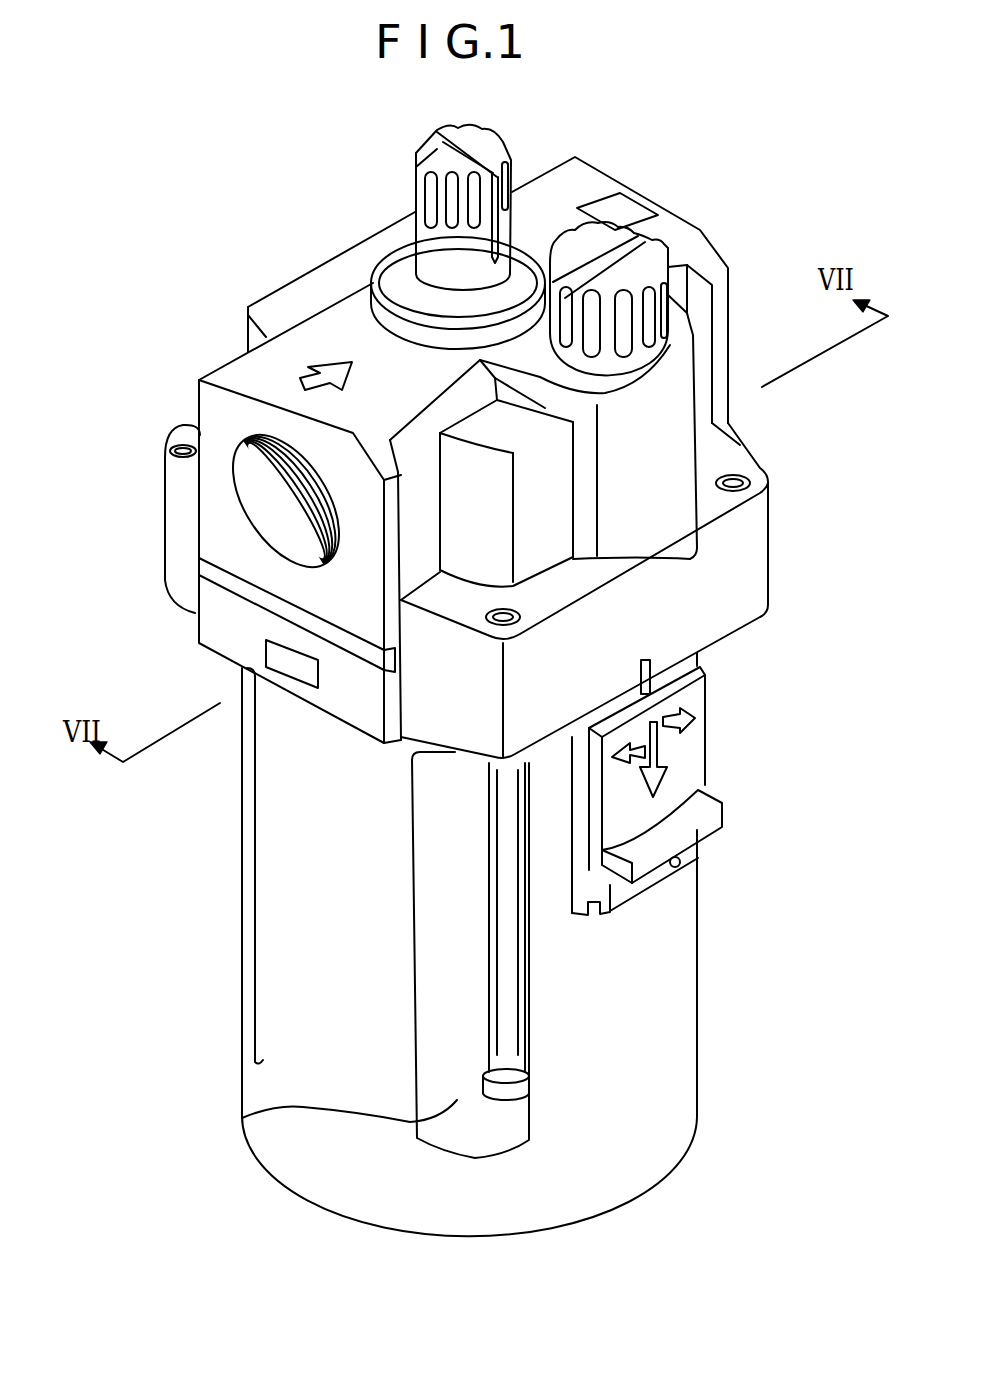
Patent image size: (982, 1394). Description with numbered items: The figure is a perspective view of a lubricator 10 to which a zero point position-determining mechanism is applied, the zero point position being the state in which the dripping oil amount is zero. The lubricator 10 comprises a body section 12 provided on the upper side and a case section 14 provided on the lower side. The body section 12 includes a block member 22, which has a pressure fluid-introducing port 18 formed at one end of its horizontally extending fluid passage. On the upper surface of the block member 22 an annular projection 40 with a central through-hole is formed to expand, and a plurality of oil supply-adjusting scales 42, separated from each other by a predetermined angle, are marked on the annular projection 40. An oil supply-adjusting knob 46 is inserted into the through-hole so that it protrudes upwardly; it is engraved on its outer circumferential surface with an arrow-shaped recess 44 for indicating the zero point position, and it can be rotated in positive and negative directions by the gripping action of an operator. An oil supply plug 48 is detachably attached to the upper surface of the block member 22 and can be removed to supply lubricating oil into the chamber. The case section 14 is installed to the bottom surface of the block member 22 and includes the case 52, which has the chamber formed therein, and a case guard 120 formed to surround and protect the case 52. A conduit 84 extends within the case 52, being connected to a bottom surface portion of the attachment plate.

The lubricator 10 is at (731, 60).
The body section 12 is at (722, 246).
The case section 14 is at (703, 927).
The pressure fluid-introducing port 18 is at (283, 498).
The block member 22 is at (735, 577).
The annular projection 40 is at (387, 315).
The oil supply-adjusting scales 42 is at (400, 257).
The arrow-shaped recess 44 is at (512, 220).
The oil supply-adjusting knob 46 is at (490, 128).
The oil supply plug 48 is at (658, 240).
The case 52 is at (246, 1120).
The conduit 84 is at (508, 1006).
The case guard 120 is at (660, 1128).